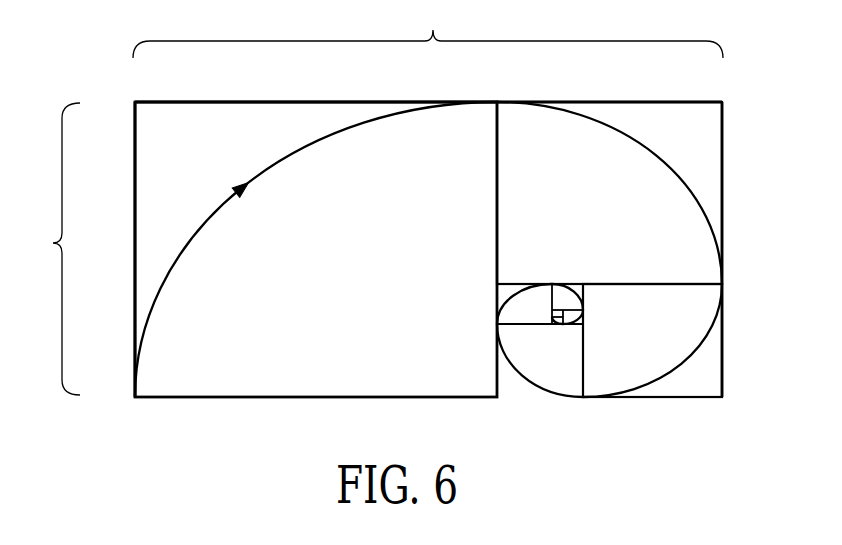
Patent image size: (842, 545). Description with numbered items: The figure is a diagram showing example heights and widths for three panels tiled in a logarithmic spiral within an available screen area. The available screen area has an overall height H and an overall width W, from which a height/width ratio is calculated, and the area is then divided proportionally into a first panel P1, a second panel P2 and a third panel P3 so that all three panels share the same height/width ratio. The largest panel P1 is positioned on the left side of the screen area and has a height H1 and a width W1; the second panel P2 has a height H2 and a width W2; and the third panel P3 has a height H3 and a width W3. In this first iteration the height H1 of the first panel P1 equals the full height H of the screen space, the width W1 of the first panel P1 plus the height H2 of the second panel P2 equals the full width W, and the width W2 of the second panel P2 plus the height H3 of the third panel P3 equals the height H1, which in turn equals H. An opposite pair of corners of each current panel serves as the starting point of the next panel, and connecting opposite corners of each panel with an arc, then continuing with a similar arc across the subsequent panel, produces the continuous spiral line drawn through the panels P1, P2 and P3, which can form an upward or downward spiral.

The width of available screen area W is at (428, 29).
The height of available screen area H is at (55, 249).
The width of panel P1 W1 is at (316, 85).
The height of panel P1 H1 is at (115, 249).
The height of panel P2 H2 is at (609, 86).
The width of panel P2 W2 is at (745, 193).
The width of panel P3 W3 is at (609, 270).
The height of panel P3 H3 is at (742, 340).
The first panel P1 is at (316, 249).
The second panel P2 is at (609, 193).
The third panel P3 is at (652, 340).